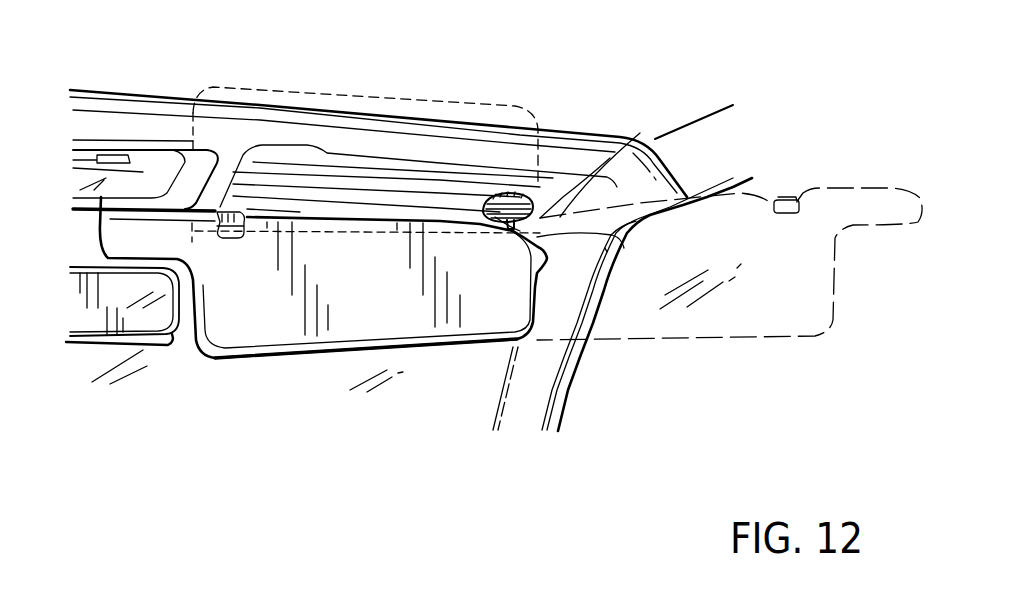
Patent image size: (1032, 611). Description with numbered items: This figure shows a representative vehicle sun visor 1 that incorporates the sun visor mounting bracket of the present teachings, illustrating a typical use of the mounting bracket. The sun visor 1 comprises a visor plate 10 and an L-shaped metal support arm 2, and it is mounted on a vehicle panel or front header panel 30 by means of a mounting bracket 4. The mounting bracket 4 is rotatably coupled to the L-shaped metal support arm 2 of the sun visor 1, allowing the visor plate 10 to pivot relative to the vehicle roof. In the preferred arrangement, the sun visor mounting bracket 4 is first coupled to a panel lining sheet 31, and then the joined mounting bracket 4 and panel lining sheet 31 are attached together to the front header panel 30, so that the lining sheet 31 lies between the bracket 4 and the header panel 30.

The vehicle sun visor 1 is at (323, 359).
The L-shaped metal support arm 2 is at (530, 200).
The mounting bracket 4 is at (503, 193).
The visor plate 10 is at (317, 336).
The front header panel 30 is at (610, 158).
The panel lining sheet 31 is at (622, 234).